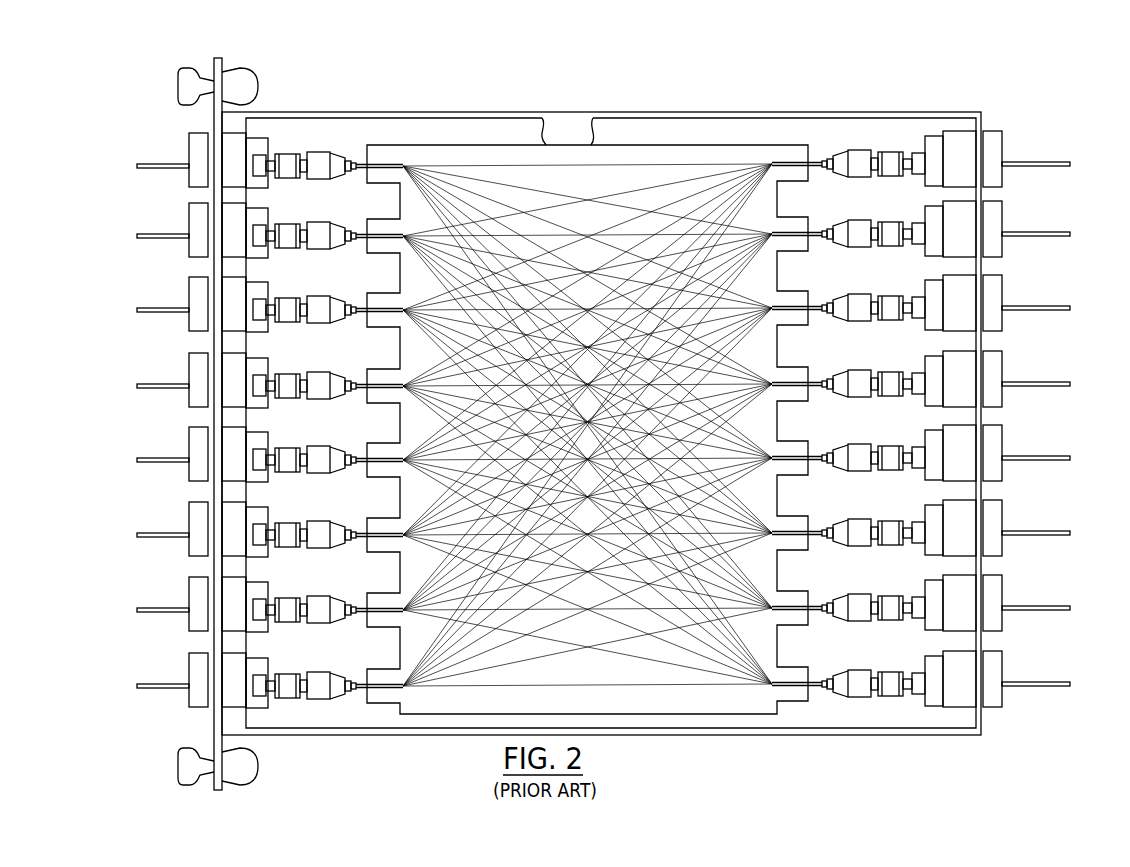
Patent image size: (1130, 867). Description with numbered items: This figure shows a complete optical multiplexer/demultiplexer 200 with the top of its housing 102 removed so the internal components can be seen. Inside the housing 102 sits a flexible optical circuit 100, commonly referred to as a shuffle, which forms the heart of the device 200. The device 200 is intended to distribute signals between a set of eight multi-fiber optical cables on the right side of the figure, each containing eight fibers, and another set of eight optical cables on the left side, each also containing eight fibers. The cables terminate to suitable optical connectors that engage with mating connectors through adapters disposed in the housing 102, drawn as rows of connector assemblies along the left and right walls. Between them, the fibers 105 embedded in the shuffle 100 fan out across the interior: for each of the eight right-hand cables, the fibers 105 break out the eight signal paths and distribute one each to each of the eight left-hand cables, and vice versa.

The flexible optical circuit 100 is at (587, 418).
The housing 102 is at (961, 111).
The fibers 105 is at (700, 178).
The optical multiplexer/demultiplexer 200 is at (1065, 90).